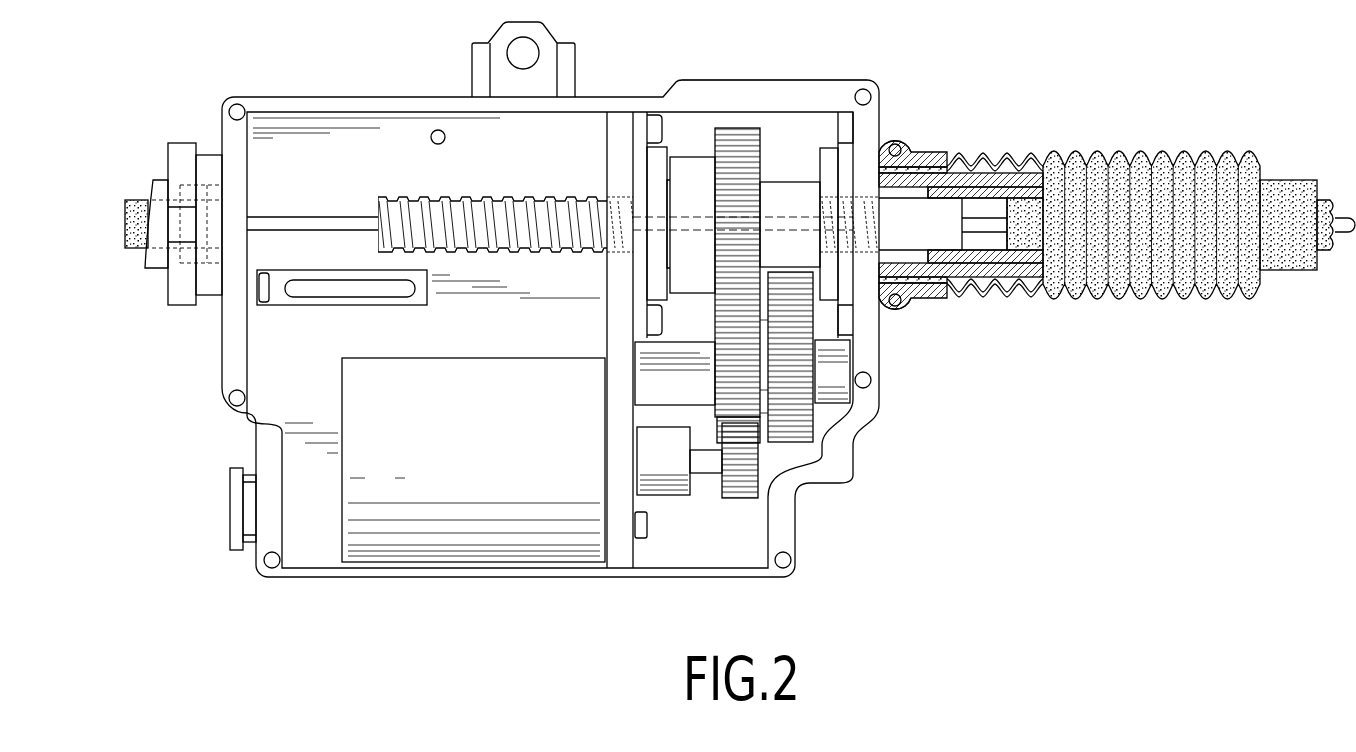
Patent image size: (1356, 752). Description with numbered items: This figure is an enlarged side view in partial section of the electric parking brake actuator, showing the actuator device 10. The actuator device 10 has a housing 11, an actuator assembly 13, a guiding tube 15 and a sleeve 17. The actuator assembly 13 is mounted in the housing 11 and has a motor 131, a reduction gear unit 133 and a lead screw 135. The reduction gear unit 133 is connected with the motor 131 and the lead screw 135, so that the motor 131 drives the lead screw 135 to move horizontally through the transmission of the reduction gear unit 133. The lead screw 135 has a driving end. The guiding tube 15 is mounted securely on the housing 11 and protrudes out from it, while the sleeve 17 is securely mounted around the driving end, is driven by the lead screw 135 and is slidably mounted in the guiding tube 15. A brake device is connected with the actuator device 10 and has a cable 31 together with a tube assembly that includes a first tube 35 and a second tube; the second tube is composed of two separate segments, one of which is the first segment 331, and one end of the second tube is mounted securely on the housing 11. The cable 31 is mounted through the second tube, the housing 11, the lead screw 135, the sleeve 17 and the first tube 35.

The actuator device 10 is at (412, 76).
The housing 11 is at (780, 88).
The actuator assembly 13 is at (805, 563).
The motor 131 is at (360, 382).
The reduction gear unit 133 is at (735, 512).
The lead screw 135 is at (897, 218).
The guiding tube 15 is at (988, 180).
The sleeve 17 is at (1027, 258).
The cable 31 is at (972, 223).
The first segment 331 is at (135, 208).
The first tube 35 is at (1023, 212).